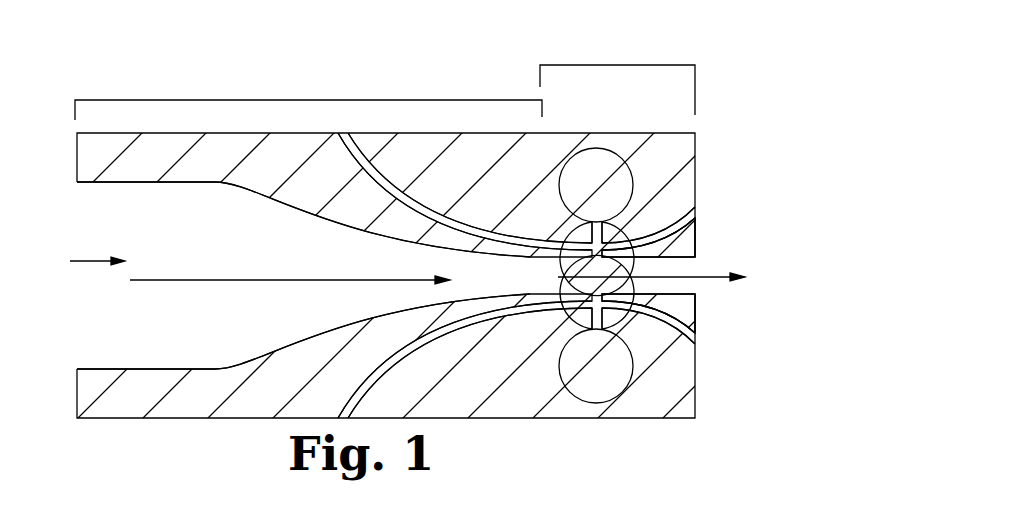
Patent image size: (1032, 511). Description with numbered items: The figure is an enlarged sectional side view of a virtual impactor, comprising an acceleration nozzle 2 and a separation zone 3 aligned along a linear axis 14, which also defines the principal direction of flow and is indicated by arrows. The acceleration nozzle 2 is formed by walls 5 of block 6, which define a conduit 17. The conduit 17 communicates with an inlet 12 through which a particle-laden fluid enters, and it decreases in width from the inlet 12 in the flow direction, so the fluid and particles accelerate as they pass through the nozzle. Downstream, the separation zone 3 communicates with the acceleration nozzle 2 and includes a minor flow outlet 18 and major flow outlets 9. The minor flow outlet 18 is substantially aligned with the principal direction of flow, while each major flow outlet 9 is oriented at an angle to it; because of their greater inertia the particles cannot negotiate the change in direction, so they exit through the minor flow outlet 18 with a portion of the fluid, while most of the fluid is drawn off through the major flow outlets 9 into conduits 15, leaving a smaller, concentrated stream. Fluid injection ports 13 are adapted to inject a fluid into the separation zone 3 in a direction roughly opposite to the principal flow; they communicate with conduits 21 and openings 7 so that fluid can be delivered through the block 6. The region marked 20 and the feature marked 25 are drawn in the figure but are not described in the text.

The acceleration nozzle 2 is at (313, 99).
The separation zone 3 is at (630, 65).
The walls 5 is at (197, 183).
The block 6 is at (280, 173).
The openings 7 is at (697, 210).
The major flow outlets 9 is at (696, 224).
The inlet 12 is at (81, 262).
The fluid injection ports 13 is at (632, 207).
The linear axis 14 is at (202, 281).
The conduits 15 is at (611, 197).
The conduit 17 is at (268, 260).
The minor flow outlet 18 is at (635, 270).
The lip region 20 is at (609, 110).
The conduits 21 is at (690, 214).
The curved slit 25 is at (590, 241).